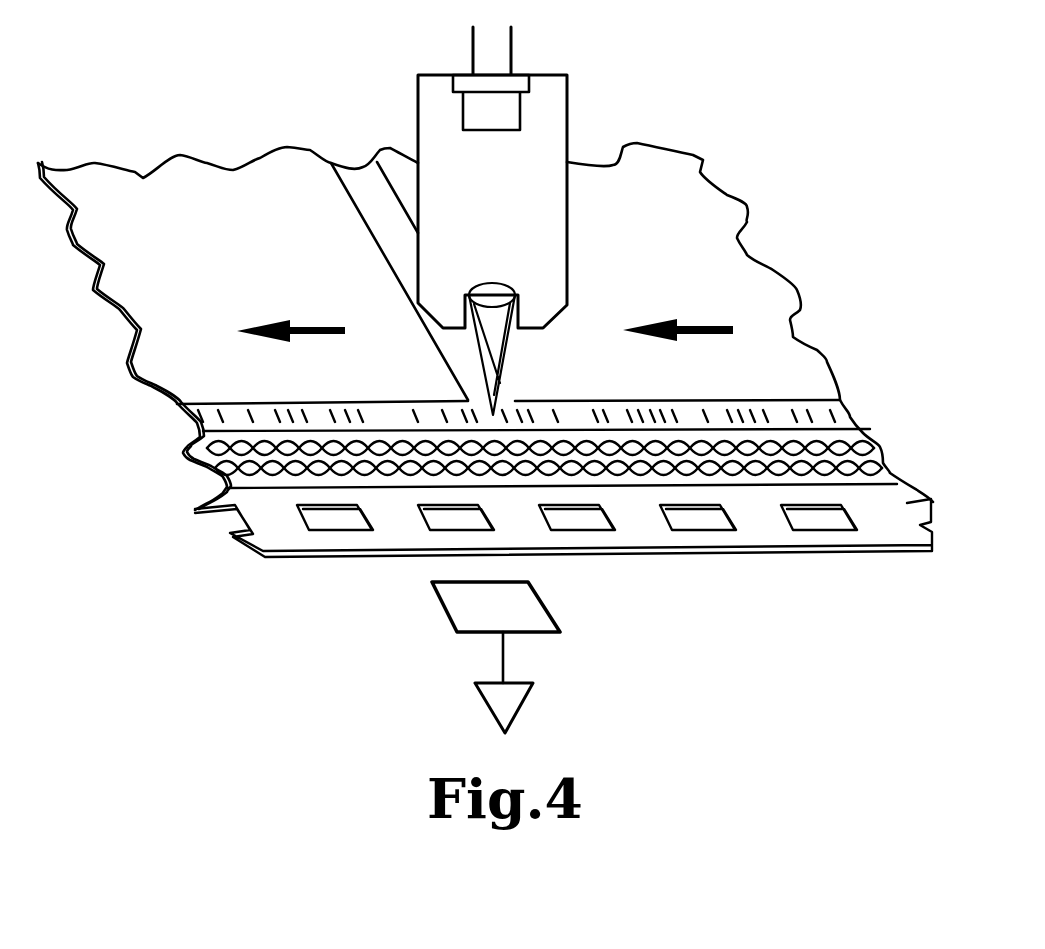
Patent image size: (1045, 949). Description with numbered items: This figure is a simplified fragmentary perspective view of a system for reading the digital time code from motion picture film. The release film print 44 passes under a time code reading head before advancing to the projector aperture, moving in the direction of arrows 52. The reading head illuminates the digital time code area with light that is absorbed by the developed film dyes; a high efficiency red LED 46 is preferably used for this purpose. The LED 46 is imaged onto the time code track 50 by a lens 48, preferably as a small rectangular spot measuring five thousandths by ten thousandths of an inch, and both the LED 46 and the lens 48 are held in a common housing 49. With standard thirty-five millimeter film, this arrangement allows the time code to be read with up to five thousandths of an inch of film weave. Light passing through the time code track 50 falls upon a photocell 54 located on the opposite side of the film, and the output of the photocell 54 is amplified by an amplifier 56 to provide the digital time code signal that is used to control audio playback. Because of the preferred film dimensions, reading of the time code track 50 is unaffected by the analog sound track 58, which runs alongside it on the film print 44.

The release film print 44 is at (805, 255).
The high efficiency red LED 46 is at (463, 107).
The lens 48 is at (497, 290).
The common housing 49 is at (567, 93).
The time code track 50 is at (813, 413).
The arrows 52 is at (703, 325).
The photocell 54 is at (552, 608).
The amplifier 56 is at (528, 697).
The analog sound track 58 is at (885, 457).